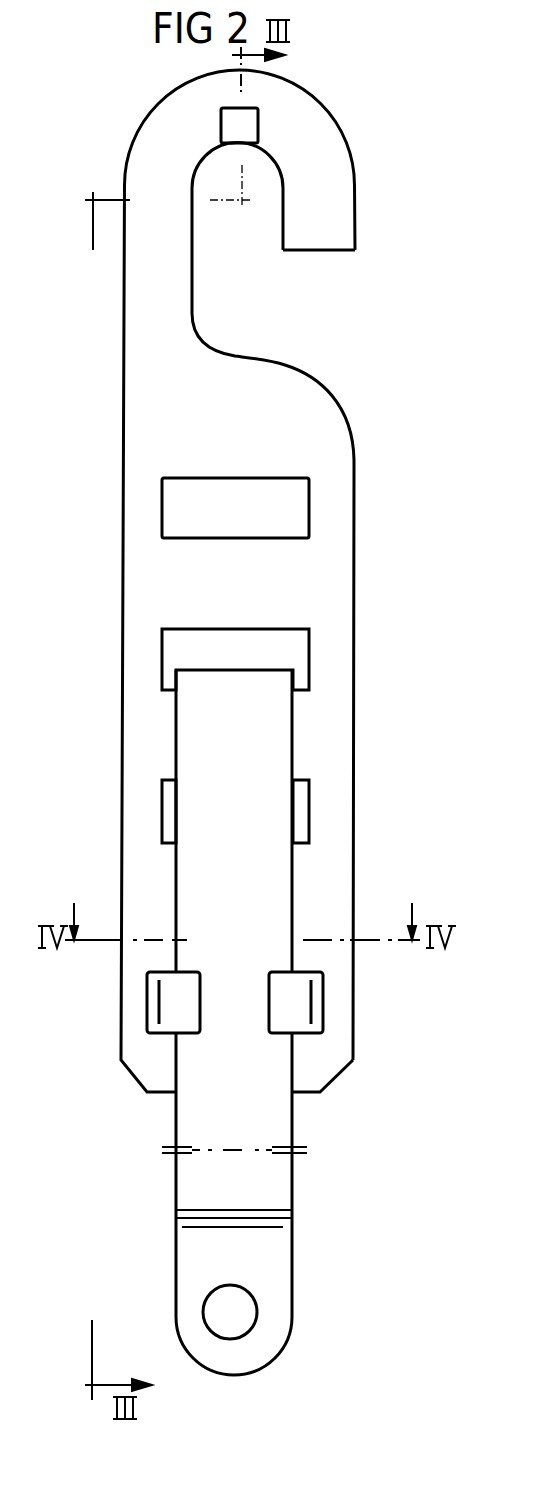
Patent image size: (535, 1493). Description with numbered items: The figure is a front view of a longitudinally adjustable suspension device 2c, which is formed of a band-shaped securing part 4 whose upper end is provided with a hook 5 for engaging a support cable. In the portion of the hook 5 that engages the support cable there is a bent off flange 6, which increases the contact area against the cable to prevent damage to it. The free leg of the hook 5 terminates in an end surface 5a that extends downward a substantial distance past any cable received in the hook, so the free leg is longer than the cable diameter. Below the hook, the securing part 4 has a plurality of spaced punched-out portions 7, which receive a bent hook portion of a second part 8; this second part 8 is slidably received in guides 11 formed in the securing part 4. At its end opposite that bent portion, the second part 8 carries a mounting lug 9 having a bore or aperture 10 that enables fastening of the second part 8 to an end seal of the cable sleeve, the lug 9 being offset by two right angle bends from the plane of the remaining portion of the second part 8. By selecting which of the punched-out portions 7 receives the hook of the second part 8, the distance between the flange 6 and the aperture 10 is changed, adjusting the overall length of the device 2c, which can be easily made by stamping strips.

The longitudinally adjustable suspension device 2c is at (357, 760).
The band-shaped securing part 4 is at (315, 418).
The hook 5 is at (332, 163).
The end surface 5a is at (335, 253).
The bent off flange 6 is at (248, 120).
The punched-out portions 7 is at (297, 513).
The second part 8 is at (270, 920).
The mounting lug 9 is at (265, 1265).
The bore or aperture 10 is at (247, 1322).
The guides 11 is at (293, 1008).